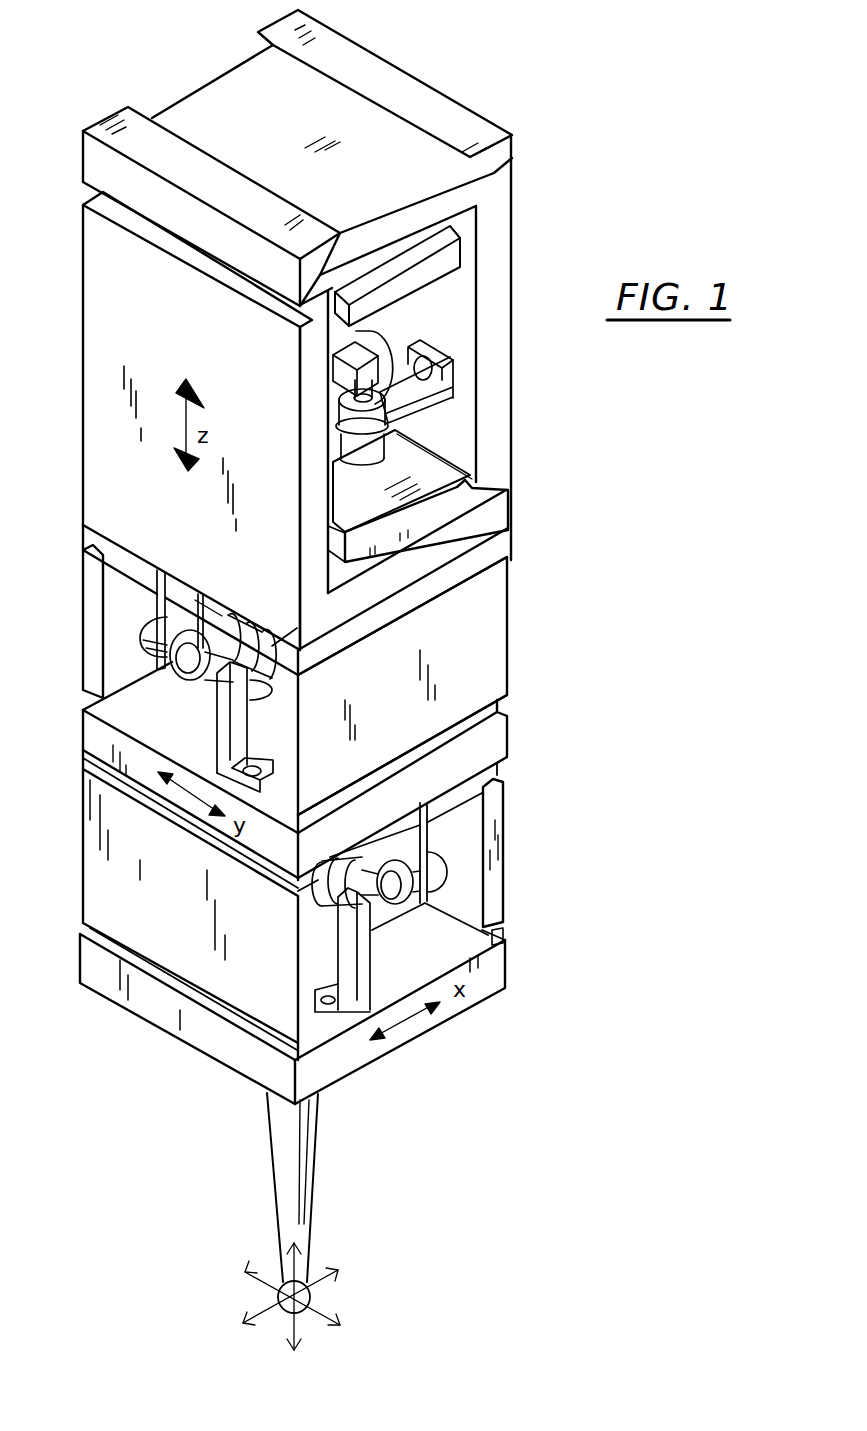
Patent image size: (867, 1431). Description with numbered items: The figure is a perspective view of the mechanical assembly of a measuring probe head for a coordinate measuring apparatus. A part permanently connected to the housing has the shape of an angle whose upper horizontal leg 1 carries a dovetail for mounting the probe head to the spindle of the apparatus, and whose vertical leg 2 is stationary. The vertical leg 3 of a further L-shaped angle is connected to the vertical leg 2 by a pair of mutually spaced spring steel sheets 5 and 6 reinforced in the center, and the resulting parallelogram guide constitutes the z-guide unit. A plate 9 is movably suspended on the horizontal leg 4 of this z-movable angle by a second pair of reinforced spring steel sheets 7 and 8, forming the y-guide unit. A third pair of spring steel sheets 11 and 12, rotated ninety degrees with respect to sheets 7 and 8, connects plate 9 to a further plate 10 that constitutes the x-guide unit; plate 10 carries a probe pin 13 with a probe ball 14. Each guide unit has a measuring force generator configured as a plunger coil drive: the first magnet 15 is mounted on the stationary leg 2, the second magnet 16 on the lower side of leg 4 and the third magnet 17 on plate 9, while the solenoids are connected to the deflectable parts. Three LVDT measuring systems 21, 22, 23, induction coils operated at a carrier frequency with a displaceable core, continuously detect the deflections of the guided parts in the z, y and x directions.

The upper horizontal leg 1 is at (100, 128).
The vertical leg 2 is at (503, 320).
The vertical leg 3 is at (97, 393).
The horizontal leg 4 is at (497, 515).
The spring steel sheet 5 is at (453, 268).
The spring steel sheet 6 is at (430, 473).
The spring steel sheet 7 is at (493, 643).
The spring steel sheet 8 is at (83, 635).
The plate 9 is at (497, 736).
The plate 10 is at (493, 970).
The spring steel sheet 11 is at (493, 883).
The spring steel sheet 12 is at (93, 847).
The probe pin 13 is at (303, 1163).
The probe ball 14 is at (313, 1293).
The first magnet 15 is at (370, 340).
The second magnet 16 is at (213, 617).
The third magnet 17 is at (390, 842).
The measuring system 21 is at (363, 460).
The measuring system 22 is at (178, 688).
The measuring system 23 is at (408, 903).